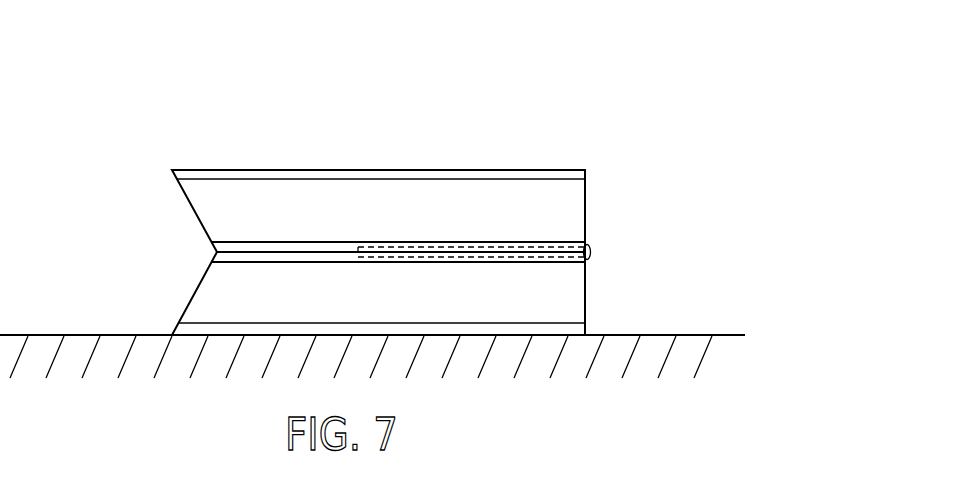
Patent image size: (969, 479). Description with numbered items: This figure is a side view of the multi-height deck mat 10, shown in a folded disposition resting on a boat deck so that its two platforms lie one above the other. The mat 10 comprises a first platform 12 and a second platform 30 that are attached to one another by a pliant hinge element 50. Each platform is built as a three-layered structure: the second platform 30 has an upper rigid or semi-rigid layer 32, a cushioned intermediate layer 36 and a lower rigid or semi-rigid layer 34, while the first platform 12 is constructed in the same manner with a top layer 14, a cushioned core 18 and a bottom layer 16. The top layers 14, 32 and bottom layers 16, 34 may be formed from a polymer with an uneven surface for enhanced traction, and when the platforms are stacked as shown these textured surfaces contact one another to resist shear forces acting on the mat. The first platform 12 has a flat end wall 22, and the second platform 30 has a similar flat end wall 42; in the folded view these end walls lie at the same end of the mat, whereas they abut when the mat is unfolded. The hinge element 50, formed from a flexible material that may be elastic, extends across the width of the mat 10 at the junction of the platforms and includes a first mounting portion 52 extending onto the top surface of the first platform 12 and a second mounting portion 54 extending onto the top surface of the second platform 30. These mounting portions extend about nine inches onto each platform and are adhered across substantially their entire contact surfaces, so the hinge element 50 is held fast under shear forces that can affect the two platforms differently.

The multi-height deck mat 10 is at (452, 187).
The first platform 12 is at (455, 293).
The top layer of first platform 14 is at (172, 326).
The bottom layer of first platform 16 is at (212, 259).
The lower plate body 18 is at (307, 300).
The flat end wall 22 is at (586, 277).
The second platform 30 is at (439, 189).
The upper rigid or semi-rigid layer 32 is at (171, 172).
The lower rigid or semi-rigid layer 34 is at (212, 242).
The cushioned intermediate layer 36 is at (302, 223).
The flat end wall 42 is at (585, 188).
The hinge element 50 is at (534, 253).
The first mounting portion 52 is at (463, 262).
The second mounting portion 54 is at (463, 250).